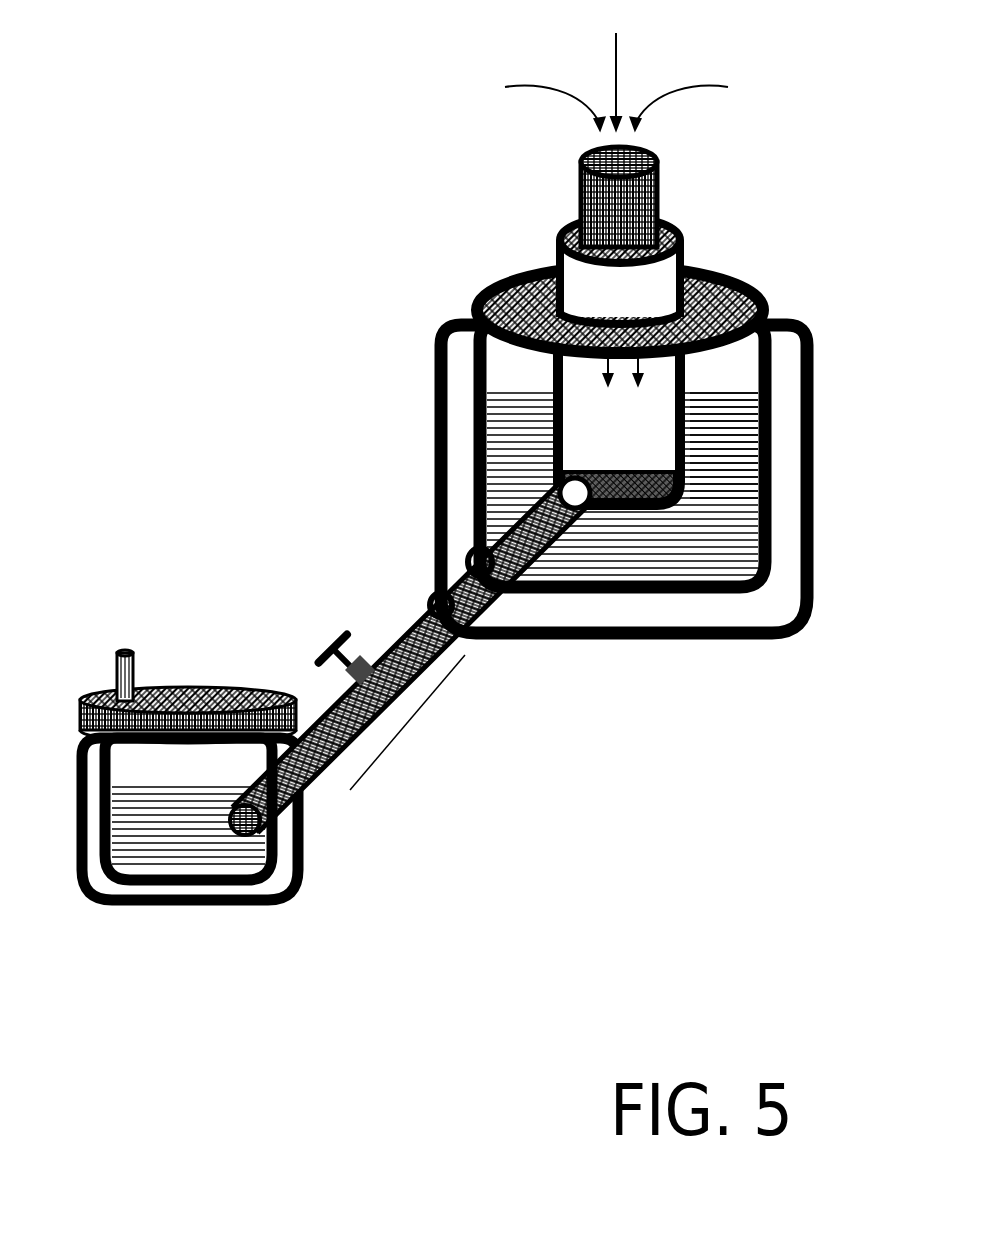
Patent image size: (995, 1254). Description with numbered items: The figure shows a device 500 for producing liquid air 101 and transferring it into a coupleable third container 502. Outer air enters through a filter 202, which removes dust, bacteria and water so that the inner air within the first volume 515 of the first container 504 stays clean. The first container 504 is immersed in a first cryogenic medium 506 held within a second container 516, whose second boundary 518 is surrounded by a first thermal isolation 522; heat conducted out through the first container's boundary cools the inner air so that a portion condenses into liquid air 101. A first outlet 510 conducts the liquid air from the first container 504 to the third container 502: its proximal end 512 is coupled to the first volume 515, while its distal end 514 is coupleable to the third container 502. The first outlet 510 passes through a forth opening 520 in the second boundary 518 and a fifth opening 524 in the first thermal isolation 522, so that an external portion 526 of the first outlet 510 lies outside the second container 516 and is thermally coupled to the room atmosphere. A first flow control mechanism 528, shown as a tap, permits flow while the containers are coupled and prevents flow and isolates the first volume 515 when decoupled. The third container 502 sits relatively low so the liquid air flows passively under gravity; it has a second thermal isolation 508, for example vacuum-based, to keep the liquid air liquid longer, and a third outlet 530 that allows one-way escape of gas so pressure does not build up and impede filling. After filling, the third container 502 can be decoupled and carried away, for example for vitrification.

The device for producing liquid air 500 is at (169, 154).
The filter 202 is at (665, 215).
The first container 504 is at (553, 250).
The first cryogenic medium 506 is at (717, 443).
The second thermal isolation 508 is at (287, 863).
The first outlet 510 is at (402, 638).
The proximal end 512 is at (615, 505).
The distal end 514 is at (230, 825).
The first volume 515 is at (612, 443).
The second container 516 is at (416, 316).
The second boundary 518 is at (478, 390).
The forth opening 520 is at (470, 573).
The first thermal isolation 522 is at (563, 637).
The fifth opening 524 is at (533, 613).
The external portion 526 is at (470, 638).
The first flow control mechanism 528 is at (325, 650).
The third outlet 530 is at (115, 652).
The third container 502 is at (329, 877).
The liquid air 101 is at (667, 505).